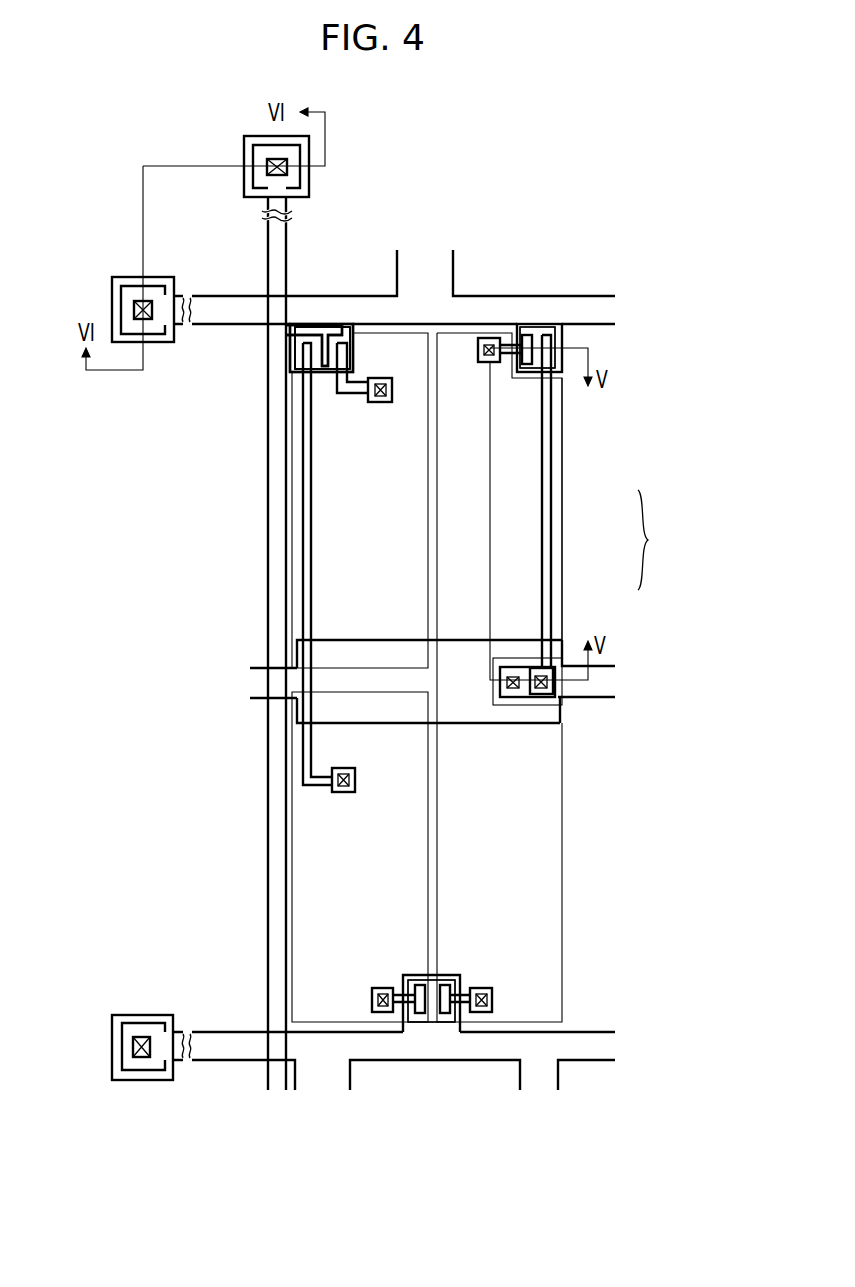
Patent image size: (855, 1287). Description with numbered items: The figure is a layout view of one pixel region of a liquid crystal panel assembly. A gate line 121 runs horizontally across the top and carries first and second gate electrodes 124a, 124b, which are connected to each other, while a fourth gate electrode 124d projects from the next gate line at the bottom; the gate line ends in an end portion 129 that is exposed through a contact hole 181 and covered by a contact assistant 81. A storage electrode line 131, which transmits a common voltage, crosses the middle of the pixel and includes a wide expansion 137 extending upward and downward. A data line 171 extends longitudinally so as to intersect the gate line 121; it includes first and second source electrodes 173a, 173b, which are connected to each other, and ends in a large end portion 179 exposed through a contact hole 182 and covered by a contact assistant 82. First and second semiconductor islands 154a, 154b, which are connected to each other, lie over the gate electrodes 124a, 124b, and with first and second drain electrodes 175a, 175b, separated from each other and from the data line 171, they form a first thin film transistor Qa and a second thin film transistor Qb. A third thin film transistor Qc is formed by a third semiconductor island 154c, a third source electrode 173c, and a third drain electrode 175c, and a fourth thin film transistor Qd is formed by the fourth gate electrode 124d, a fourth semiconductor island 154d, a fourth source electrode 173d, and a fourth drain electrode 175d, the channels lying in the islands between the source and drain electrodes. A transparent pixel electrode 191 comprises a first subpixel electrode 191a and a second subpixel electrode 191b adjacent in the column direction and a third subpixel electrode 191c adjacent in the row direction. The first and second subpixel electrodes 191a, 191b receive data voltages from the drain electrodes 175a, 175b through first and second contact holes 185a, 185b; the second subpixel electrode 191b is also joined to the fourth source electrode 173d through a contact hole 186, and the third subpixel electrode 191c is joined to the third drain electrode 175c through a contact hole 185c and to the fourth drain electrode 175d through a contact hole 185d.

The contact assistant 82 is at (244, 188).
The end portion of data line 179 is at (253, 150).
The contact hole 182 is at (272, 160).
The contact assistant 81 is at (165, 280).
The end portion of gate line 129 is at (121, 297).
The contact hole 181 is at (138, 300).
The gate line 121 is at (575, 296).
The data line 171 is at (268, 590).
The expansion of storage electrode line 137 is at (358, 640).
The storage electrode line 131 is at (602, 697).
The first subpixel electrode 191a is at (428, 497).
The second subpixel electrode 191b is at (385, 690).
The third subpixel electrode 191c is at (565, 540).
The pixel electrode 191 is at (661, 540).
The first gate electrode 124a is at (355, 360).
The second gate electrode 124b is at (300, 357).
The fourth gate electrode 124d is at (404, 1012).
The first semiconductor island 154a is at (343, 326).
The second semiconductor island 154b is at (302, 327).
The third semiconductor island 154c is at (537, 326).
The fourth semiconductor island 154d is at (448, 980).
The first source electrode 173a is at (324, 326).
The second source electrode 173b is at (290, 326).
The third source electrode 173c is at (552, 440).
The fourth source electrode 173d is at (410, 985).
The first drain electrode 175a is at (345, 395).
The second drain electrode 175b is at (303, 537).
The third drain electrode 175c is at (513, 353).
The fourth drain electrode 175d is at (452, 985).
The first contact hole 185a is at (383, 402).
The second contact hole 185b is at (355, 780).
The contact hole 185c is at (478, 355).
The contact hole 185d is at (492, 998).
The contact hole 186 is at (372, 998).
The first thin film transistor Qa is at (328, 372).
The second thin film transistor Qb is at (316, 377).
The third thin film transistor Qc is at (526, 325).
The fourth thin film transistor Qd is at (440, 1035).